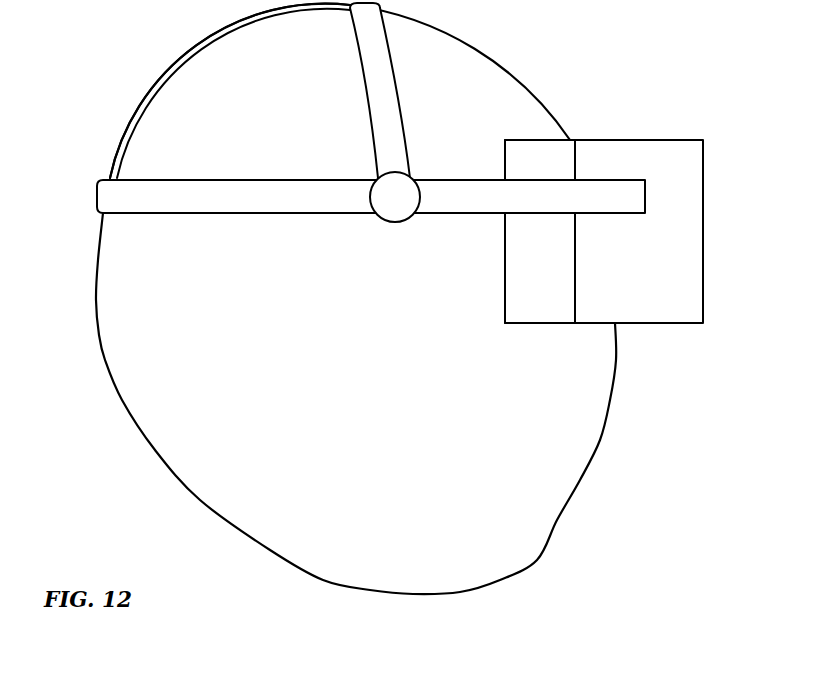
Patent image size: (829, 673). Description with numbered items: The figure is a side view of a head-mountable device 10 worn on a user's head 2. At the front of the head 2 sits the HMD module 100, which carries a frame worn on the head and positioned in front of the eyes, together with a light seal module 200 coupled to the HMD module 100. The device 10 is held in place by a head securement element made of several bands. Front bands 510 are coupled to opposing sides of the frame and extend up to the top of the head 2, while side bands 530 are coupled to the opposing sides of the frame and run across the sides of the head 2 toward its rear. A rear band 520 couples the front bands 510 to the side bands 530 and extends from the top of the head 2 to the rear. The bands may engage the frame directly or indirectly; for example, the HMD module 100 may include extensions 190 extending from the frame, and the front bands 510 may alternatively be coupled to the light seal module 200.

The head 2 is at (110, 268).
The head-mountable device 10 is at (645, 200).
The HMD module 100 is at (663, 150).
The extensions 190 is at (548, 205).
The light seal module 200 is at (558, 152).
The front bands 510 is at (388, 85).
The rear band 520 is at (196, 52).
The side bands 530 is at (232, 205).